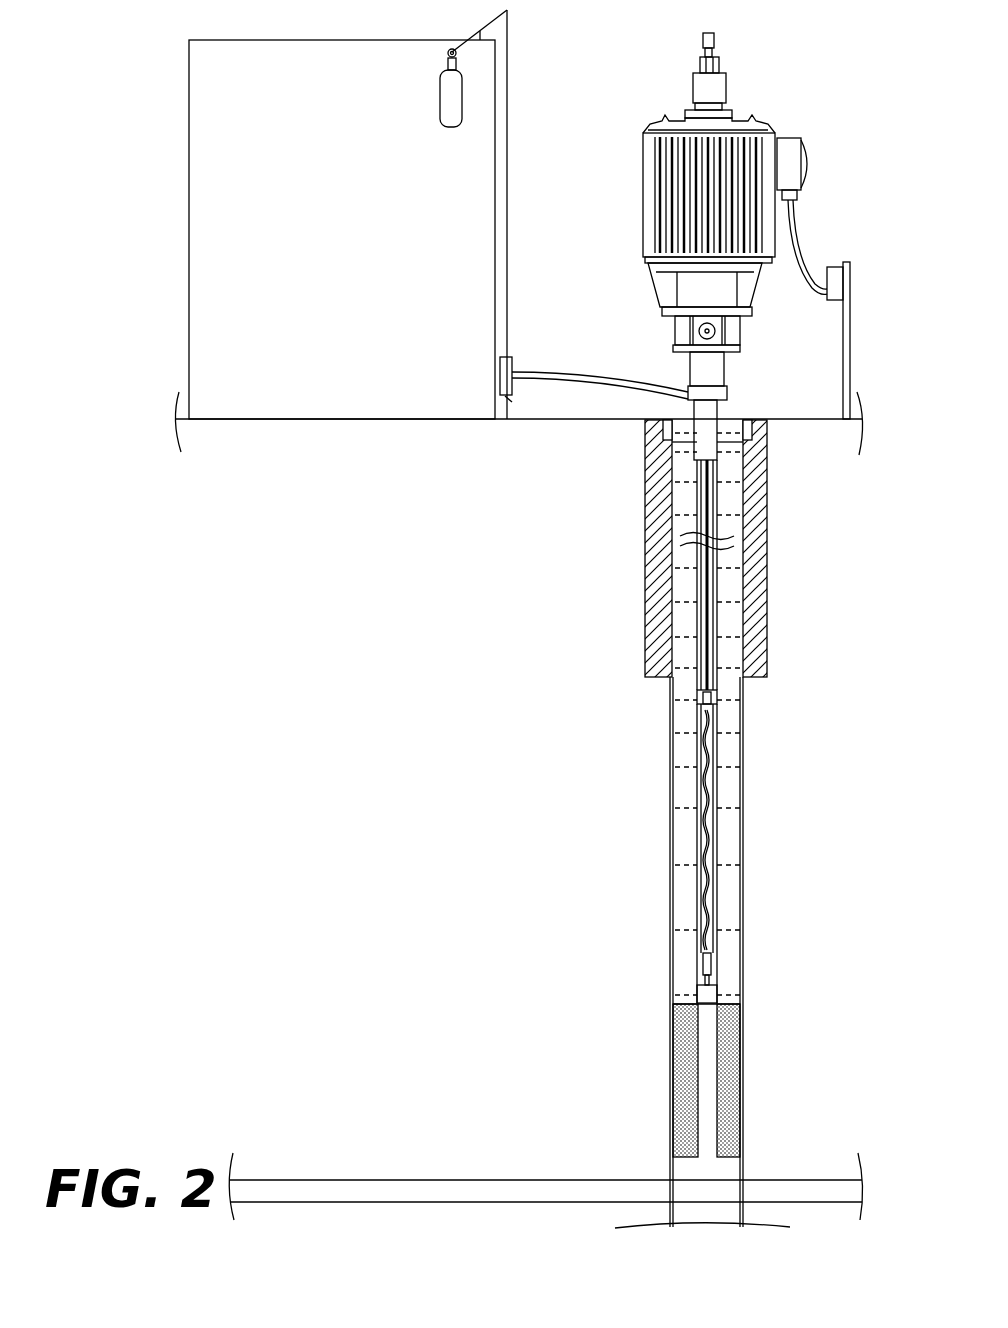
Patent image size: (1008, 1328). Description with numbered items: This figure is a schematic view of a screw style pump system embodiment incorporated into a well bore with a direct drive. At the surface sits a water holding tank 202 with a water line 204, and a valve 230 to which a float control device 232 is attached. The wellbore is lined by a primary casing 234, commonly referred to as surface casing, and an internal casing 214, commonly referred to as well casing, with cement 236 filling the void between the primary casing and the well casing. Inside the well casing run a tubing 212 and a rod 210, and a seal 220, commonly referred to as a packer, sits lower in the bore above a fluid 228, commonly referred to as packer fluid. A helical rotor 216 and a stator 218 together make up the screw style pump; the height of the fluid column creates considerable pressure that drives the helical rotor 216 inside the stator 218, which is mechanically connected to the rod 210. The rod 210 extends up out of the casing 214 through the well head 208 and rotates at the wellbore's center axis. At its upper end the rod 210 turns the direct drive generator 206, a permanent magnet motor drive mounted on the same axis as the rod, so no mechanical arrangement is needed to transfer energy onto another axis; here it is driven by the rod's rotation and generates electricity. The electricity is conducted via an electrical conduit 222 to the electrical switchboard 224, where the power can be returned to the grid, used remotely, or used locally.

The water holding tank 202 is at (356, 233).
The water line 204 is at (535, 372).
The generator 206 is at (636, 150).
The well head 208 is at (730, 393).
The rod 210 is at (720, 490).
The tubing 212 is at (715, 576).
The internal casing 214 is at (748, 723).
The helical rotor 216 is at (710, 930).
The stator 218 is at (716, 856).
The seal 220 is at (730, 1090).
The electrical conduit 222 is at (808, 300).
The electrical switchboard 224 is at (833, 266).
The fluid 228 is at (682, 900).
The valve 230 is at (509, 400).
The float control device 232 is at (520, 70).
The primary casing 234 is at (643, 569).
The cement 236 is at (655, 488).